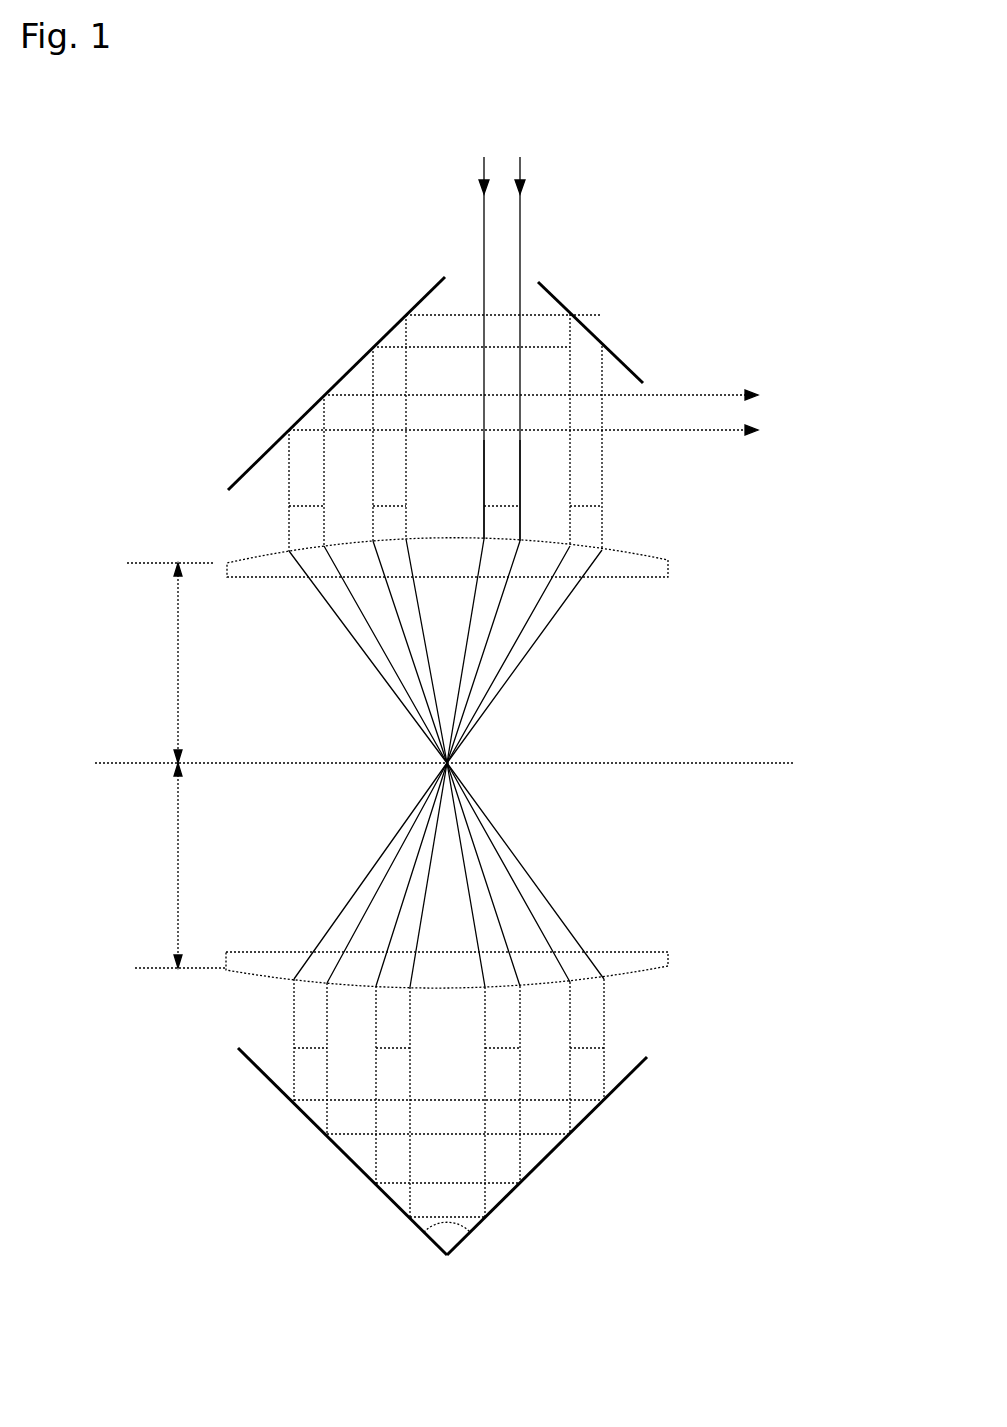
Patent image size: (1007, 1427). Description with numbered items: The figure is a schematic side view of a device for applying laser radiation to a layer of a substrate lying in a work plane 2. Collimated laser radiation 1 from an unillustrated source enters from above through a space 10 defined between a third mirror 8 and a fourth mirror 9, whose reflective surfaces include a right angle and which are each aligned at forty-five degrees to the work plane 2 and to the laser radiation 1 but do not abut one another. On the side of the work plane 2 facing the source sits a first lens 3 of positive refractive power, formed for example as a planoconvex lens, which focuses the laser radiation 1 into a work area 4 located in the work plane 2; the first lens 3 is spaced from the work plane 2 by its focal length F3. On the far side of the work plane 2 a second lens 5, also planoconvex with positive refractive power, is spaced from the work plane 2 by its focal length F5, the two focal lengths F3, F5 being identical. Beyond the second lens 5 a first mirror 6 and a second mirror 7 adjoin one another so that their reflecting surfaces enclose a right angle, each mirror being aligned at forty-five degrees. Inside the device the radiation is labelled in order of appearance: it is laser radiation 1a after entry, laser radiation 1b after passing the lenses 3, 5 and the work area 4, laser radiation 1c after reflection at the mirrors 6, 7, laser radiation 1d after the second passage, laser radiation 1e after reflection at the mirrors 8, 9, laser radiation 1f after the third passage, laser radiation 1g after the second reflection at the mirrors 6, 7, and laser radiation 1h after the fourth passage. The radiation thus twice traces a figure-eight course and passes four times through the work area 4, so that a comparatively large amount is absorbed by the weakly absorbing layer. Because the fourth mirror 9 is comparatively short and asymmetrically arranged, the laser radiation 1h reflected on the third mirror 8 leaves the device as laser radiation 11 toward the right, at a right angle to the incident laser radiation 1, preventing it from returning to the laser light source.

The laser radiation 1 is at (503, 218).
The laser radiation 1a is at (502, 490).
The laser radiation 1b is at (393, 1102).
The laser radiation 1c is at (502, 1101).
The laser radiation 1d is at (389, 428).
The laser radiation 1e is at (586, 432).
The laser radiation 1f is at (310, 1057).
The laser radiation 1g is at (587, 1055).
The laser radiation 1h is at (306, 473).
The work plane 2 is at (708, 762).
The first lens 3 is at (646, 566).
The work area 4 is at (458, 758).
The second lens 5 is at (652, 959).
The first mirror 6 is at (557, 1150).
The second mirror 7 is at (350, 1158).
The third mirror 8 is at (347, 370).
The fourth mirror 9 is at (588, 327).
The space 10 is at (468, 282).
The laser radiation 11 is at (685, 407).
The focal length of the first lens F3 is at (178, 657).
The focal length of the second lens F5 is at (178, 865).